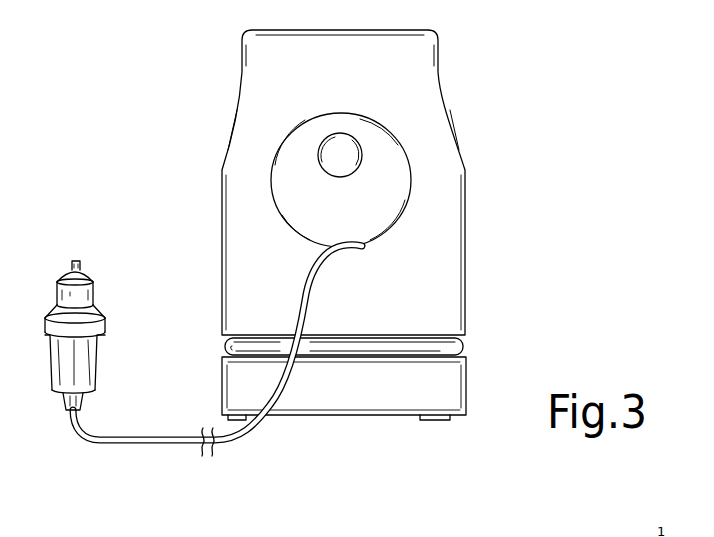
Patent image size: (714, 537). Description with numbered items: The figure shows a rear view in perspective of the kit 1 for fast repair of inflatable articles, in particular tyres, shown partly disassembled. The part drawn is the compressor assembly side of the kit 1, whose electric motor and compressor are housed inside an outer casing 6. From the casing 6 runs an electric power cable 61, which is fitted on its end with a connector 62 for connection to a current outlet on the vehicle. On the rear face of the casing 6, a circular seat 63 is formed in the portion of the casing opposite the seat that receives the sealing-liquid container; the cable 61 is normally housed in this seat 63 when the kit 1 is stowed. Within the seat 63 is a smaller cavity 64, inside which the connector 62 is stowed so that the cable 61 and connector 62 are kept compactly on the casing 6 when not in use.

The kit 1 is at (536, 134).
The outer casing 6 is at (456, 274).
The electric power cable 61 is at (163, 446).
The connector 62 is at (86, 357).
The seat 63 is at (378, 203).
The cavity 64 is at (339, 153).